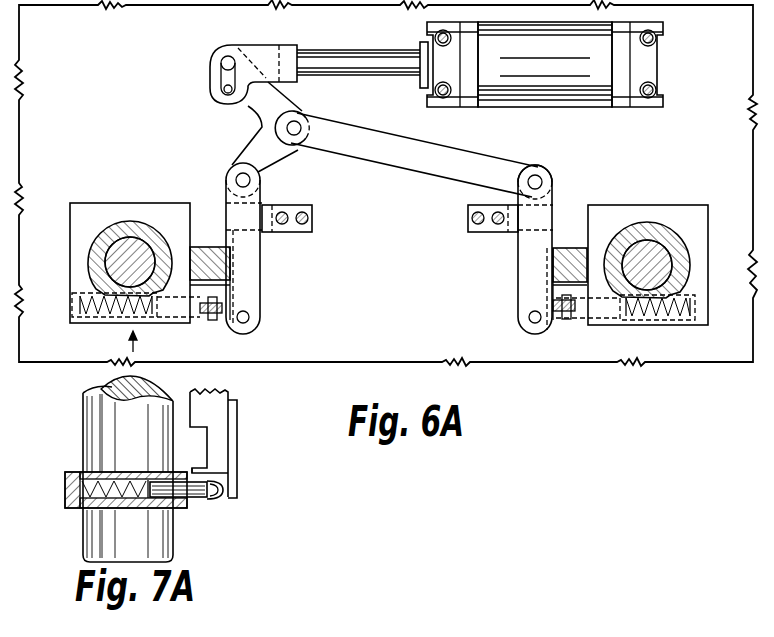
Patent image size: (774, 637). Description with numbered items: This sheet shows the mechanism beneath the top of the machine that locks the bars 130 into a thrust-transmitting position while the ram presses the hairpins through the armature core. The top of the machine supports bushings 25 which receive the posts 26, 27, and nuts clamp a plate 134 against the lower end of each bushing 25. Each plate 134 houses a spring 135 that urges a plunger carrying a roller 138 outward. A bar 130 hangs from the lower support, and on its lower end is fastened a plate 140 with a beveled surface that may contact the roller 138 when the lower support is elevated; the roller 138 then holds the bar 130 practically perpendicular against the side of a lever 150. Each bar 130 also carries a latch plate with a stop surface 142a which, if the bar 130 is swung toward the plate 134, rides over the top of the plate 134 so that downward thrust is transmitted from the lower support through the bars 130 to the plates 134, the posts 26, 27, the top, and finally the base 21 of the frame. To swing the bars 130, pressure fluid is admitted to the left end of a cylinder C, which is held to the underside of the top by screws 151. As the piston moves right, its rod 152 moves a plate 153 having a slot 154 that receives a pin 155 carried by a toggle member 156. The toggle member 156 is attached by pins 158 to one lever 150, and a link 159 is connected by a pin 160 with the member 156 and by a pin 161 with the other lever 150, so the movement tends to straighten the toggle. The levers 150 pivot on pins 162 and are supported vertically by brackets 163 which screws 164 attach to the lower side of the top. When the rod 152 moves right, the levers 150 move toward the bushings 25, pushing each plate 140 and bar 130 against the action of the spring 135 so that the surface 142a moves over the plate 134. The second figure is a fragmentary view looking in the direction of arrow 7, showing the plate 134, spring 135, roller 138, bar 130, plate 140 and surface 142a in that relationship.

In FIG. 6A, the base 21 is at (587, 363).
In FIG. 6A, the cylinder C is at (580, 108).
In FIG. 6A, the screws 151 is at (657, 40).
In FIG. 6A, the piston rod 152 is at (366, 56).
In FIG. 6A, the plate 153 is at (276, 45).
In FIG. 6A, the slot 154 is at (223, 90).
In FIG. 6A, the pin 155 is at (226, 60).
In FIG. 6A, the toggle member 156 is at (251, 113).
In FIG. 6A, the pins 158 is at (239, 179).
In FIG. 6A, the link 159 is at (396, 136).
In FIG. 6A, the pin 160 is at (298, 125).
In FIG. 6A, the pin 161 is at (539, 180).
In FIG. 6A, the pins 162 is at (250, 319).
In FIG. 6A, the brackets 163 is at (296, 205).
In FIG. 6A, the screws 164 is at (310, 218).
In FIG. 6A, the bars 130 is at (209, 247).
In FIG. 7A, the bars 130 is at (225, 395).
In FIG. 6A, the lever 150 is at (262, 265).
In FIG. 6A, the plate 140 is at (240, 336).
In FIG. 7A, the plate 140 is at (237, 455).
In FIG. 6A, the plate 134 is at (156, 204).
In FIG. 7A, the plate 134 is at (78, 472).
In FIG. 6A, the bushings 25 is at (128, 222).
In FIG. 6A, the post 26 is at (112, 263).
In FIG. 6A, the post 27 is at (668, 262).
In FIG. 6A, the spring 135 is at (383, 306).
In FIG. 7A, the spring 135 is at (88, 500).
In FIG. 6A, the arrow 7 is at (140, 343).
In FIG. 7A, the stop surface 142a is at (194, 470).
In FIG. 7A, the roller 138 is at (214, 502).